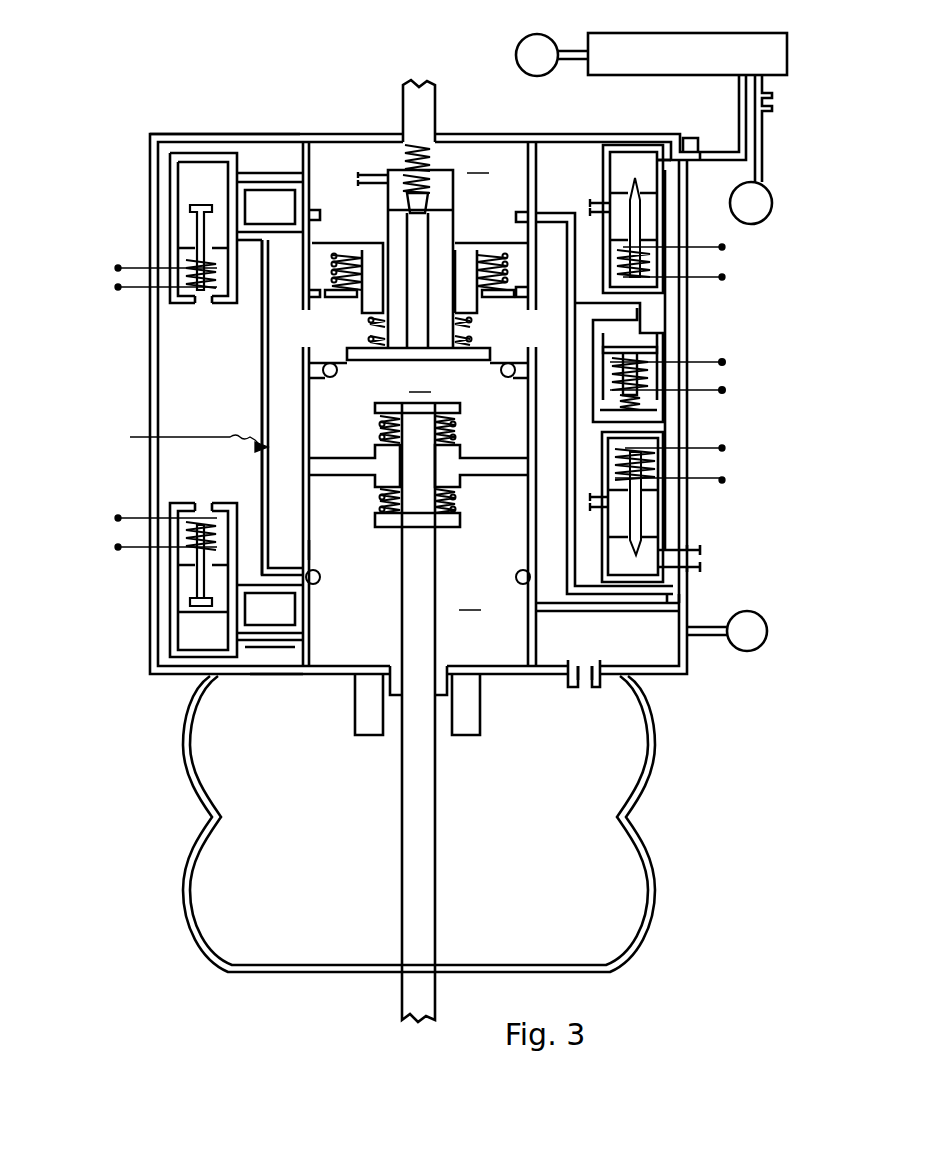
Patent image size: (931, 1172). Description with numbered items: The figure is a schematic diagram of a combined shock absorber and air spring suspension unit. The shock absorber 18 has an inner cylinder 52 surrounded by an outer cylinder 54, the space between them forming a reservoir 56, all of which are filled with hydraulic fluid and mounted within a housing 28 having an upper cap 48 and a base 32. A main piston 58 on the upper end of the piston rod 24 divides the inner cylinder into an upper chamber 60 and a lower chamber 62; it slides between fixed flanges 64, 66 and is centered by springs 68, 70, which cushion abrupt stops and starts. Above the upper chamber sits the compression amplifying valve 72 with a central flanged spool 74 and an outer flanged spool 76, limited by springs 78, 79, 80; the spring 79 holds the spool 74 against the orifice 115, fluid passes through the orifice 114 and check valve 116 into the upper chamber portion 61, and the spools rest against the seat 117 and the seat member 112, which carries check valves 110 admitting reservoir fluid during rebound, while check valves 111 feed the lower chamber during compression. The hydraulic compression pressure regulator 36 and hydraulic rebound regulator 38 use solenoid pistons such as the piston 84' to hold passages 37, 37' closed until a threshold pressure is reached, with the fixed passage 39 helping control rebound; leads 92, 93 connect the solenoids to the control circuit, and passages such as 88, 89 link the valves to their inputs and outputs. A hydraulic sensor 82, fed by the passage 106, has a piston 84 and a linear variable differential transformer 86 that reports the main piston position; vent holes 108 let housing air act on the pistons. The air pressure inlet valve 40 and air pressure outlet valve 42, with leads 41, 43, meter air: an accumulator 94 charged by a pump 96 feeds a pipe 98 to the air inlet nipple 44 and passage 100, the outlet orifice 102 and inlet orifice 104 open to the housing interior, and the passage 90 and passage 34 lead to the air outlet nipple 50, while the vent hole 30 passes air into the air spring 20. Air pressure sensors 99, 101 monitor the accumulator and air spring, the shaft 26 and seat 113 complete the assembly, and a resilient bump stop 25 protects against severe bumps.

The shock absorber 18 is at (184, 438).
The air spring 20 is at (652, 745).
The piston rod 24 is at (437, 770).
The resilient bump stop 25 is at (358, 725).
The upper shaft 26 is at (437, 106).
The housing 28 is at (150, 345).
The vent hole 30 is at (577, 680).
The base 32 is at (272, 677).
The lower passage 34 is at (683, 598).
The hydraulic compression pressure regulator 36 is at (170, 185).
The passage 37 is at (254, 205).
The passage 37' is at (200, 662).
The hydraulic rebound regulator 38 is at (180, 588).
The passage 39 is at (305, 632).
The air pressure inlet valve 40 is at (666, 220).
The solenoid leads 41 is at (706, 278).
The air pressure outlet valve 42 is at (665, 525).
The solenoid leads 43 is at (706, 480).
The air inlet nipple 44 is at (692, 148).
The upper cap 48 is at (195, 133).
The air outlet nipple 50 is at (700, 553).
The inner cylinder 52 is at (262, 400).
The outer cylinder 54 is at (262, 363).
The reservoir 56 is at (280, 322).
The main piston 58 is at (360, 468).
The upper chamber 60 is at (420, 382).
The upper chamber portion 61 is at (478, 163).
The lower chamber 62 is at (470, 600).
The fixed flange 64 is at (458, 410).
The fixed flange 66 is at (455, 520).
The spring 68 is at (385, 432).
The spring 70 is at (457, 496).
The compression amplifying valve 72 is at (357, 168).
The central flanged spool 74 is at (455, 200).
The outer flanged spool 76 is at (317, 248).
The spring 78 is at (325, 268).
The spring 79 is at (420, 183).
The spring 80 is at (473, 323).
The hydraulic sensor 82 is at (655, 332).
The piston 84 is at (671, 355).
The solenoid piston 84' is at (156, 247).
The linear variable differential transformer 86 is at (640, 372).
The passage 88 is at (272, 165).
The channel 89 is at (262, 241).
The passage 90 is at (700, 563).
The leads 92 is at (128, 288).
The electrical leads 93 is at (130, 548).
The accumulator 94 is at (702, 34).
The pump 96 is at (515, 55).
The pipe 98 is at (766, 137).
The air pressure sensor 99 is at (770, 214).
The passage 100 is at (672, 158).
The air pressure sensor 101 is at (749, 651).
The outlet orifice 102 is at (592, 200).
The inlet orifice 104 is at (590, 505).
The passage 106 is at (573, 310).
The vent holes 108 is at (205, 302).
The check valves 110 is at (331, 362).
The check valves 111 is at (321, 577).
The seat member 112 is at (344, 375).
The seat 113 is at (312, 546).
The orifice 114 is at (430, 238).
The orifice 115 is at (438, 357).
The check valve 116 is at (400, 175).
The seat 117 is at (319, 216).